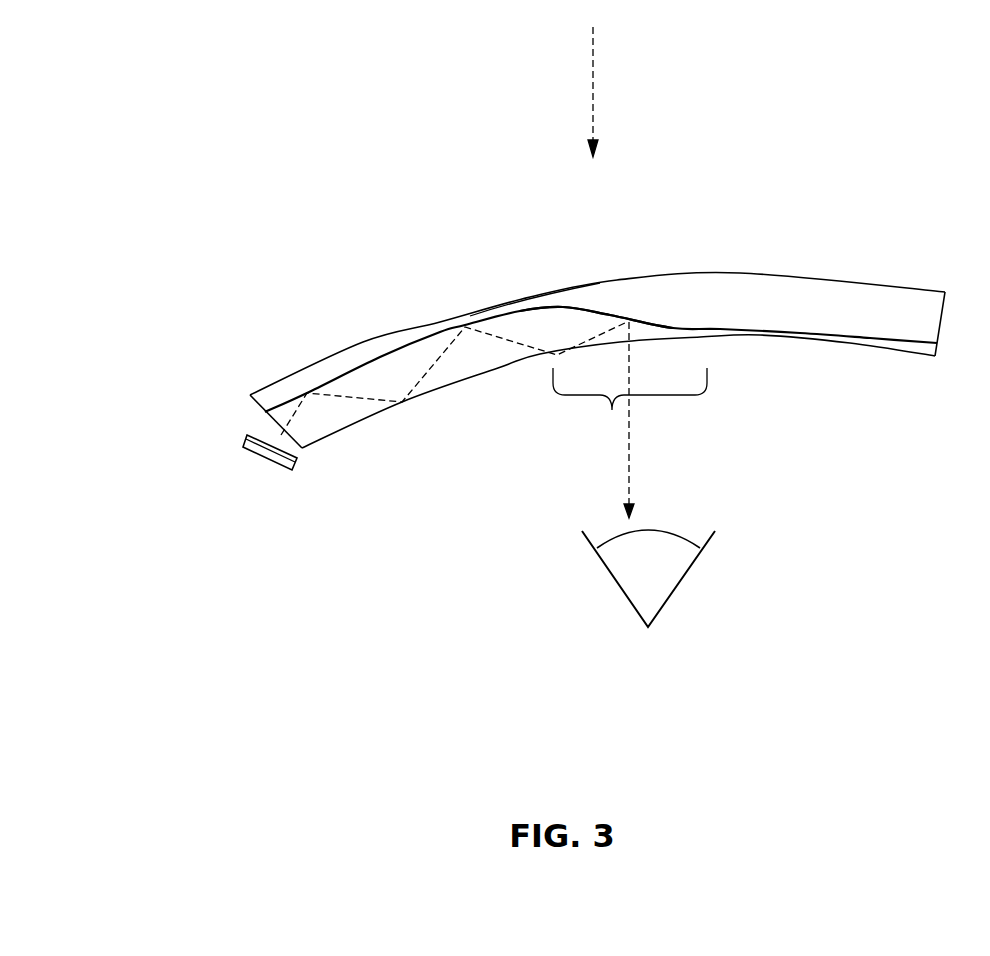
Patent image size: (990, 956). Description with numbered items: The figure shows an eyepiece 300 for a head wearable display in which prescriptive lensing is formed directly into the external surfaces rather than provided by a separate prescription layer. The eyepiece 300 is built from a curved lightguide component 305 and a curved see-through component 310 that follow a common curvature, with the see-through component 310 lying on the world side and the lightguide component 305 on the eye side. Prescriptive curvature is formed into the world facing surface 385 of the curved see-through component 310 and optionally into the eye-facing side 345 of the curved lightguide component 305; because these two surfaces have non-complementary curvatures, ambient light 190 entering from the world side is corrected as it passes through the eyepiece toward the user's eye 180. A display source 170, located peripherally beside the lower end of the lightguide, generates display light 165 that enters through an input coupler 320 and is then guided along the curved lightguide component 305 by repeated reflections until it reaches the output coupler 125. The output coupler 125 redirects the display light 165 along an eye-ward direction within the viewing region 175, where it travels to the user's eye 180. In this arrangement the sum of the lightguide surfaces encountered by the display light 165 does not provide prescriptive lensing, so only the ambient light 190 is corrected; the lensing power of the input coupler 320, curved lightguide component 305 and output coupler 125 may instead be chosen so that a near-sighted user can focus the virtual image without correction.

The eyepiece 300 is at (170, 177).
The curved see-through component 310 is at (812, 300).
The curved lightguide component 305 is at (397, 372).
The world facing surface 385 is at (530, 297).
The output coupler 125 is at (593, 312).
The eye-facing side 345 is at (443, 388).
The display light 165 is at (632, 422).
The viewing region 175 is at (612, 410).
The user's eye 180 is at (633, 578).
The ambient light 190 is at (593, 80).
The input coupler 320 is at (263, 420).
The display source 170 is at (277, 467).